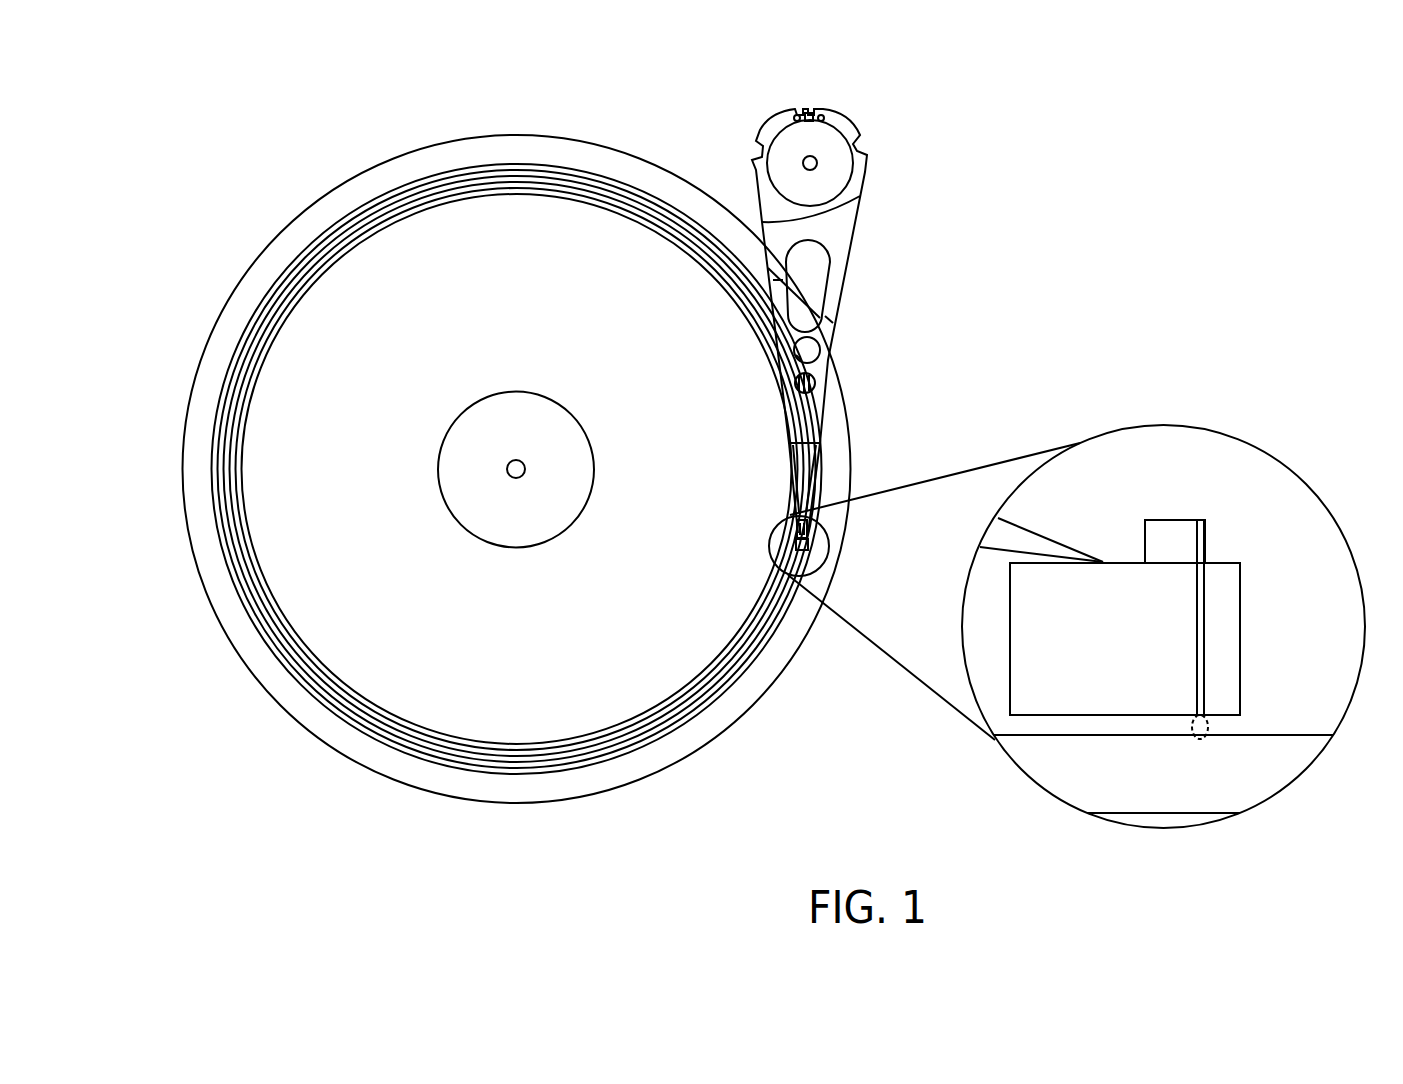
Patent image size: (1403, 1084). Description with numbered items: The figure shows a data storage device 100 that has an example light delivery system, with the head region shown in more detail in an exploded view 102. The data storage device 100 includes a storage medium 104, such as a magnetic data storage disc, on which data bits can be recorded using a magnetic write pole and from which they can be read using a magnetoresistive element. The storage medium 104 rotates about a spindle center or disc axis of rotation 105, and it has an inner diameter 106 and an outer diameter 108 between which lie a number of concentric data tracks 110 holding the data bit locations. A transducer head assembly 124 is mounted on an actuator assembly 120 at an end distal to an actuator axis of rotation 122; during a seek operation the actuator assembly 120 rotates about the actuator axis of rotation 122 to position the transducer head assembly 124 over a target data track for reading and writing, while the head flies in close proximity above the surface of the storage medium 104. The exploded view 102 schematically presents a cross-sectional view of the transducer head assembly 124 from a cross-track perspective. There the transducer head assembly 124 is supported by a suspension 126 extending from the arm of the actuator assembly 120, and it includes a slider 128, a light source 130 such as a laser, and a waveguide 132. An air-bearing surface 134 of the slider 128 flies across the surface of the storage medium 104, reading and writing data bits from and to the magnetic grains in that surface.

The data storage device 100 is at (252, 104).
The exploded view 102 is at (1156, 426).
The storage medium 104 is at (594, 143).
The disc axis of rotation 105 is at (510, 467).
The inner diameter 106 is at (482, 397).
The outer diameter 108 is at (392, 189).
The data tracks 110 is at (692, 707).
The actuator assembly 120 is at (882, 253).
The actuator axis of rotation 122 is at (817, 160).
The transducer head assembly 124 is at (810, 538).
The suspension 126 is at (791, 468).
The slider 128 is at (1033, 662).
The light source 130 is at (1172, 538).
The waveguide 132 is at (1205, 640).
The air-bearing surface 134 is at (1037, 717).